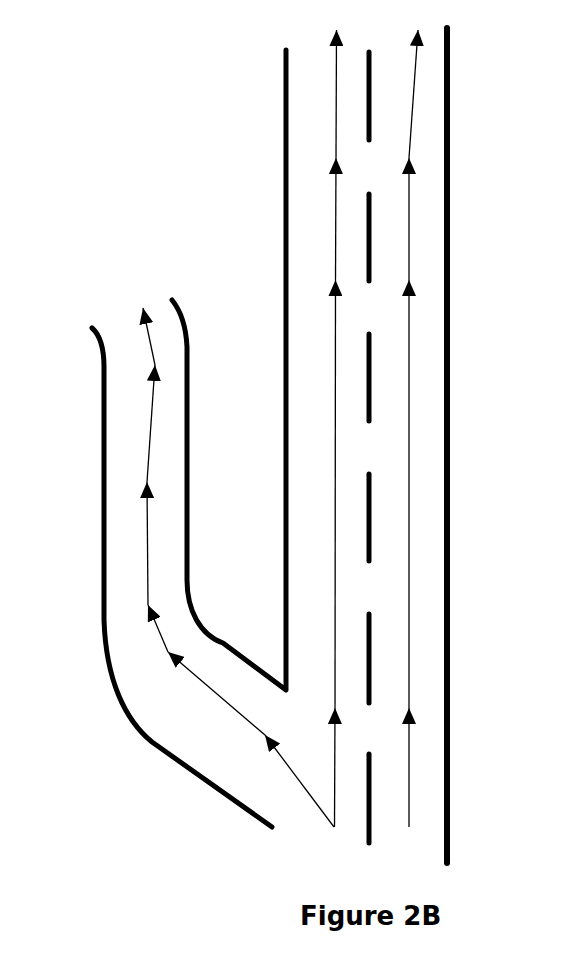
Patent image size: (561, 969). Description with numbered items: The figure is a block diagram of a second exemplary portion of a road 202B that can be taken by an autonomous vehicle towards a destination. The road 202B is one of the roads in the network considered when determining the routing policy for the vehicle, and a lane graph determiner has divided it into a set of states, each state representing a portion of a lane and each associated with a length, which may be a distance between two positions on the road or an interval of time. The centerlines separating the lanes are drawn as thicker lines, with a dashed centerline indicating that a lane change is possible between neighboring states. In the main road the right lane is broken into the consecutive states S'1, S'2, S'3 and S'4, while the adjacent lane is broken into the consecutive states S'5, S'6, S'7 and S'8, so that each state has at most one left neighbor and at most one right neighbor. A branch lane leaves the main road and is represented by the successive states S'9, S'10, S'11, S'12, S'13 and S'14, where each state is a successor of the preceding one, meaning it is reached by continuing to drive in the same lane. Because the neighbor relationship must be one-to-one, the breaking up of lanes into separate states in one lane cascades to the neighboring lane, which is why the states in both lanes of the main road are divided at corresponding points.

The portion of the road 202B is at (447, 540).
The state S'1 is at (395, 767).
The state S'2 is at (393, 494).
The state S'3 is at (395, 219).
The state S'4 is at (399, 94).
The state S'5 is at (317, 767).
The state S'6 is at (315, 494).
The state S'7 is at (318, 219).
The state S'8 is at (318, 94).
The state S'9 is at (294, 781).
The state S'10 is at (216, 693).
The state S'11 is at (140, 628).
The state S'12 is at (130, 543).
The state S'13 is at (135, 423).
The state S'14 is at (132, 336).